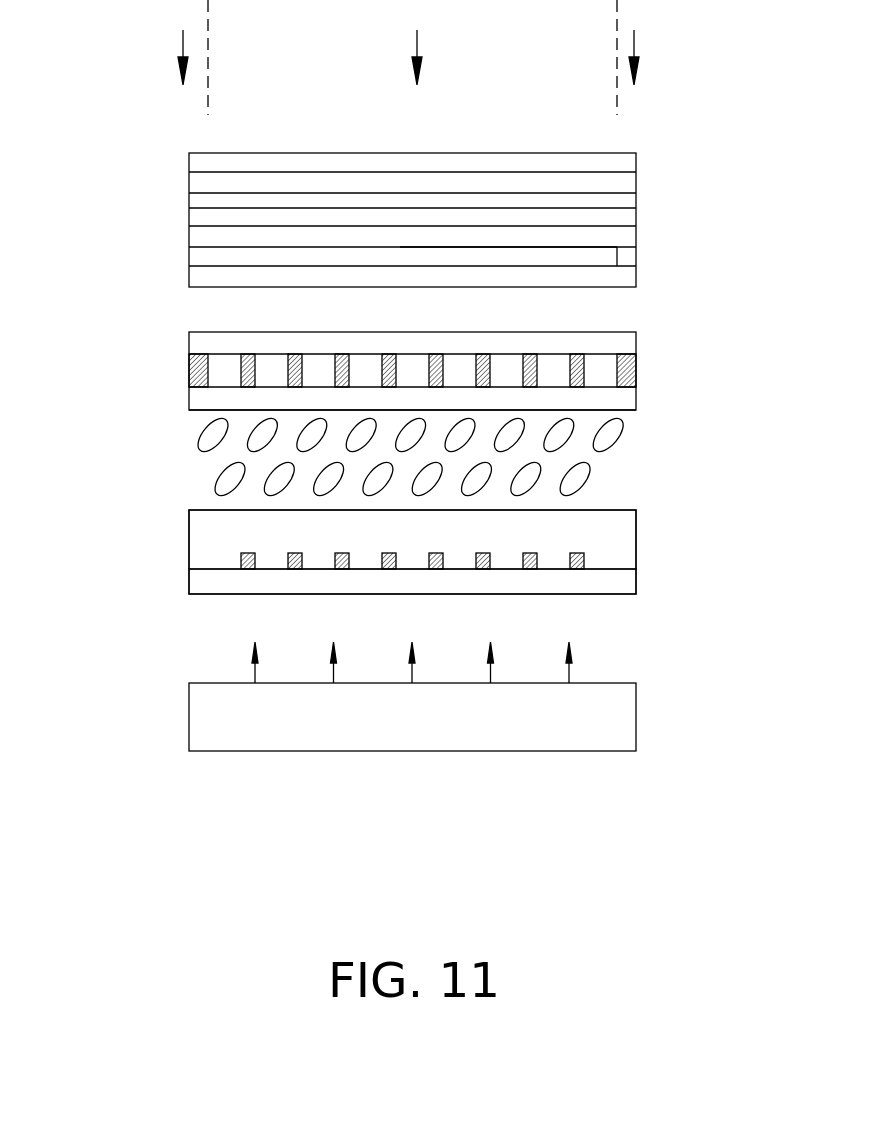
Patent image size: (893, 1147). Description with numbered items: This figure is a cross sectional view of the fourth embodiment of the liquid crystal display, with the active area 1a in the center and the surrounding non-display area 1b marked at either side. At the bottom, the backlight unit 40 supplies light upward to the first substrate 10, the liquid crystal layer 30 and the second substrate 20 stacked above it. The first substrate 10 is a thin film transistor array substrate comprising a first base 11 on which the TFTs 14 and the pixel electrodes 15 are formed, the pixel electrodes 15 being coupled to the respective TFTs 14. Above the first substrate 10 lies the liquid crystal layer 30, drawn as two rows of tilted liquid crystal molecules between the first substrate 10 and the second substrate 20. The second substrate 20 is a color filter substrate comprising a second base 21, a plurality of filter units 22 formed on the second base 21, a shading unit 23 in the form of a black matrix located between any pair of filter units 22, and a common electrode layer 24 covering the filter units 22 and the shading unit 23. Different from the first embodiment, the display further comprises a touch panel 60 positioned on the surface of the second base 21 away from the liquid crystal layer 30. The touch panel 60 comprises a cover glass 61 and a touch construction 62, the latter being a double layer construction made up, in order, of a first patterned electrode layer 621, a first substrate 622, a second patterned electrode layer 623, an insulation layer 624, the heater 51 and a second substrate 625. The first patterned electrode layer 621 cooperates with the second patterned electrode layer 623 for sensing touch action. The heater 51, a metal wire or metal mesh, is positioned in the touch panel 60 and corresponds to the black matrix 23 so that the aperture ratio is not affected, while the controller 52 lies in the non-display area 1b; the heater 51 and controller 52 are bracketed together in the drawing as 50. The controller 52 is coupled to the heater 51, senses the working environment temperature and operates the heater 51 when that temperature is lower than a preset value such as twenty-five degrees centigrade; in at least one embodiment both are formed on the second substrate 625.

The active area 1a is at (415, 47).
The non-display area 1b is at (409, 47).
The first substrate 10 is at (389, 572).
The first base 11 is at (598, 583).
The TFTs 14 is at (583, 562).
The pixel electrodes 15 is at (612, 535).
The second substrate 20 is at (463, 385).
The second base 21 is at (623, 345).
The filter units 22 is at (605, 375).
The shading unit 23 is at (583, 387).
The common electrode layer 24 is at (583, 405).
The liquid crystal layer 30 is at (667, 489).
The backlight unit 40 is at (590, 737).
The touch sensing structure 50 is at (566, 272).
The heater 51 is at (590, 260).
The controller 52 is at (622, 257).
The touch panel 60 is at (353, 211).
The cover glass 61 is at (208, 165).
The touch construction 62 is at (363, 230).
The first patterned electrode layer 621 is at (212, 186).
The first substrate 622 is at (215, 203).
The second patterned electrode layer 623 is at (218, 222).
The insulation layer 624 is at (218, 243).
The second substrate 625 is at (382, 279).